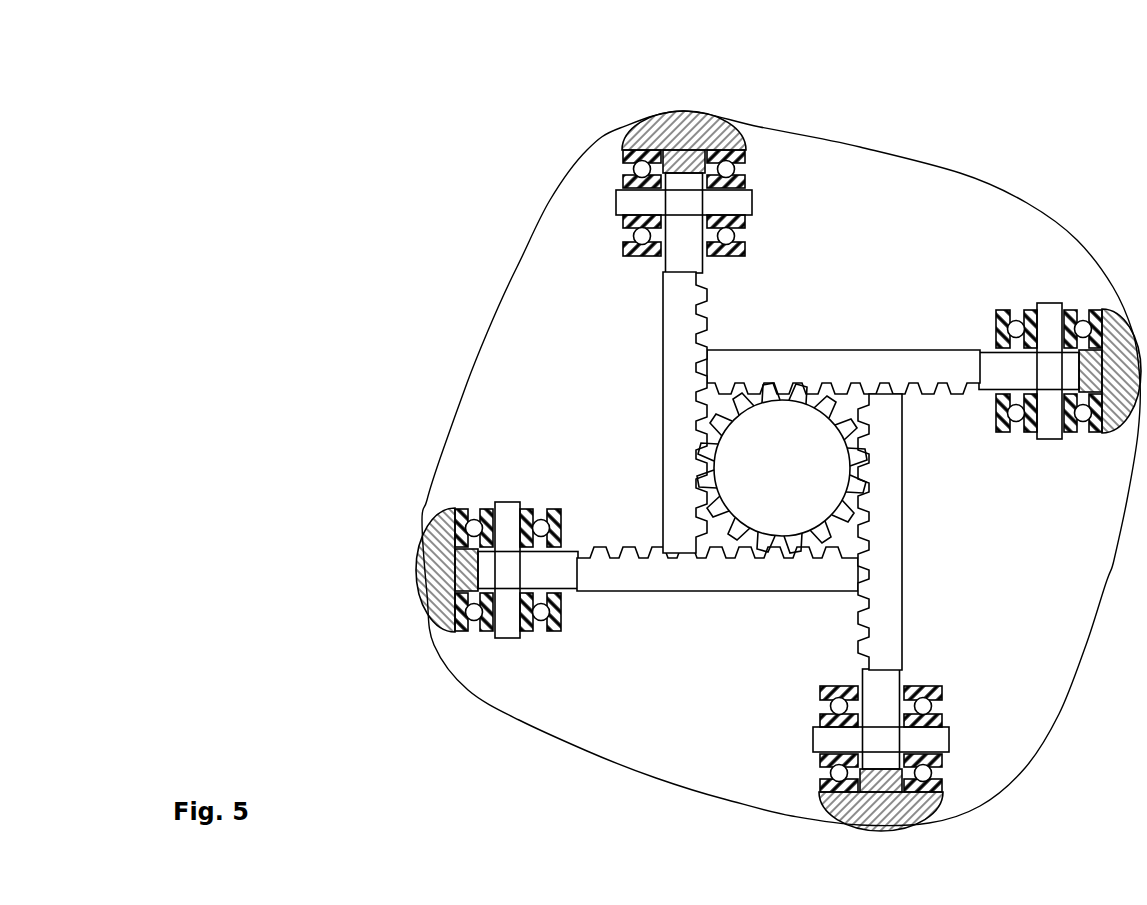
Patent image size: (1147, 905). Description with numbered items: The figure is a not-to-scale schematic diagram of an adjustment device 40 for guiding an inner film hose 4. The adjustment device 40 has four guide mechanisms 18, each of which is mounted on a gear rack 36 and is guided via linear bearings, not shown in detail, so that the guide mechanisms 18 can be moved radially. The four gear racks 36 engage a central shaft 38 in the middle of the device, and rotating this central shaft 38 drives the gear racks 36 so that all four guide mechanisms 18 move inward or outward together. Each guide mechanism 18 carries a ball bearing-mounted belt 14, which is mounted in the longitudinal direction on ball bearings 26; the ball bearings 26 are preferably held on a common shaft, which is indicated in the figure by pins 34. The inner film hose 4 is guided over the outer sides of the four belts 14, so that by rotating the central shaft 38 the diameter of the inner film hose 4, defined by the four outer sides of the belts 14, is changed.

The inner film hose 4 is at (468, 378).
The belt 14 is at (640, 113).
The guide mechanism 18 is at (678, 167).
The ball bearing 26 is at (622, 182).
The pin 34 is at (617, 204).
The gear rack 36 is at (660, 317).
The central shaft 38 is at (772, 468).
The adjustment device 40 is at (912, 285).